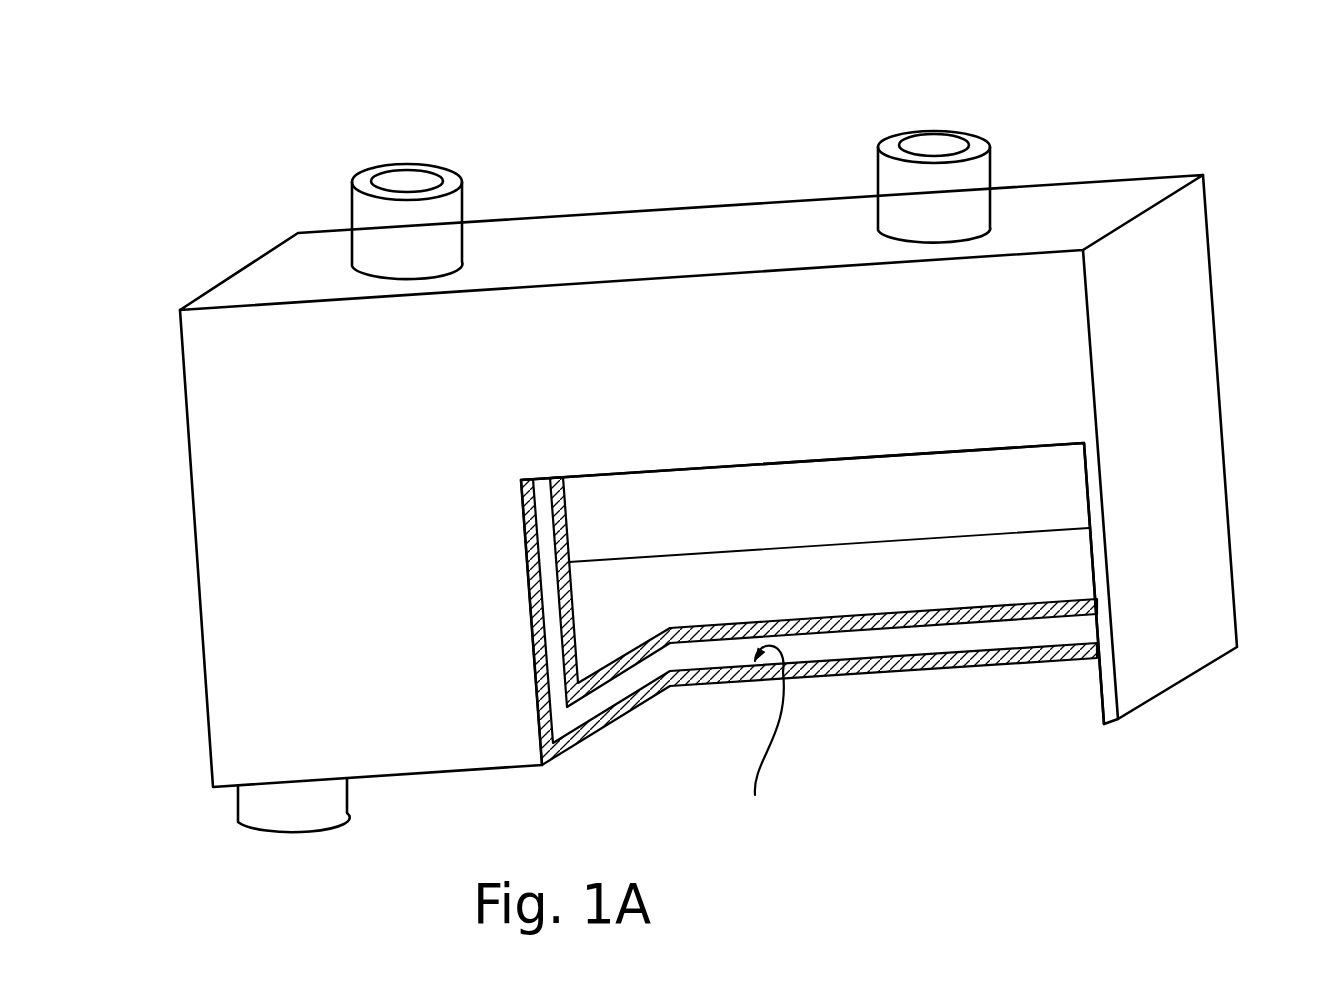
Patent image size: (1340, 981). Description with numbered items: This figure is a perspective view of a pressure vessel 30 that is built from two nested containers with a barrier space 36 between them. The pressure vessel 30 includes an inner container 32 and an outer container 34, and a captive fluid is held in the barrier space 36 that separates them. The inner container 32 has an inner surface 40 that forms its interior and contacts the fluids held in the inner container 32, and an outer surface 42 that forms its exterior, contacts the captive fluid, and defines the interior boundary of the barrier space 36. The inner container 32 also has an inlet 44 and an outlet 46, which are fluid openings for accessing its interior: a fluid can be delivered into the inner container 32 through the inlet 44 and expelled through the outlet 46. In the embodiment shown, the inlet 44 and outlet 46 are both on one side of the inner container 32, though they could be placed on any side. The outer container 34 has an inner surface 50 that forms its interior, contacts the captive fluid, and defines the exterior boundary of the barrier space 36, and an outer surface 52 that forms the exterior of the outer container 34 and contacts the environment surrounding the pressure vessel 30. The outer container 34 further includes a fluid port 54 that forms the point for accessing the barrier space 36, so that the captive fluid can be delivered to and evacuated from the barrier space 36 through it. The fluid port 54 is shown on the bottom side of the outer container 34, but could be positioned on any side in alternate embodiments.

The pressure vessel 30 is at (506, 101).
The inner container 32 is at (843, 520).
The outer container 34 is at (602, 365).
The barrier space 36 is at (725, 652).
The inner surface 40 is at (971, 482).
The outer surface 42 is at (1045, 634).
The inlet 44 is at (383, 227).
The outlet 46 is at (955, 180).
The inner surface 50 is at (763, 736).
The outer surface 52 is at (1038, 328).
The fluid port 54 is at (293, 810).